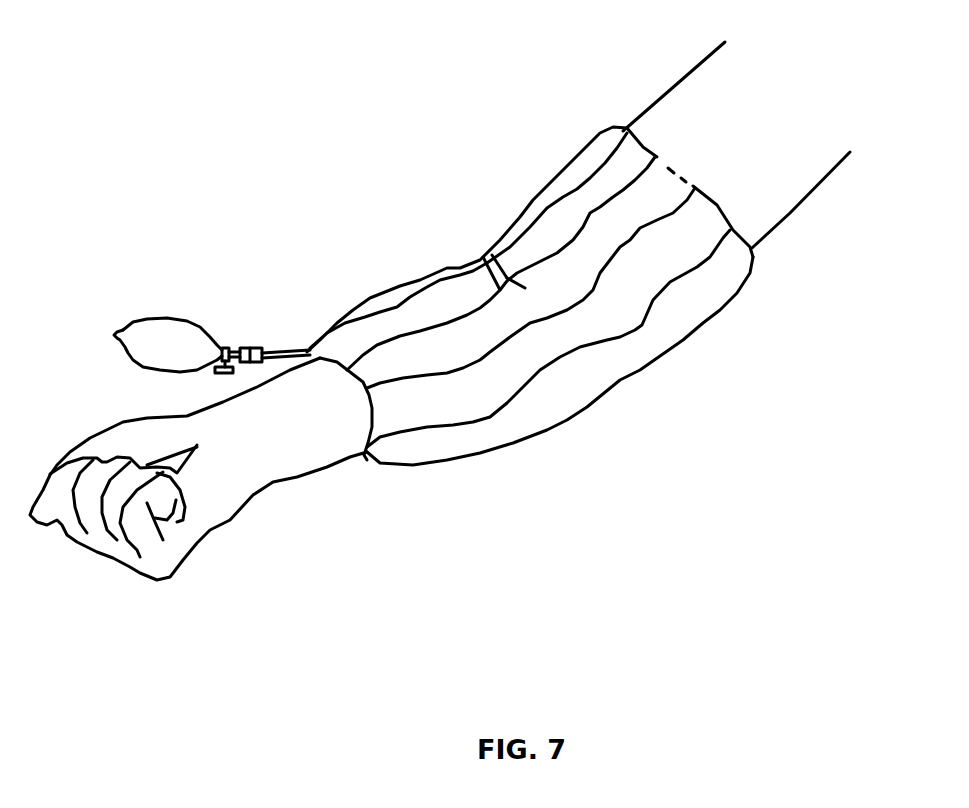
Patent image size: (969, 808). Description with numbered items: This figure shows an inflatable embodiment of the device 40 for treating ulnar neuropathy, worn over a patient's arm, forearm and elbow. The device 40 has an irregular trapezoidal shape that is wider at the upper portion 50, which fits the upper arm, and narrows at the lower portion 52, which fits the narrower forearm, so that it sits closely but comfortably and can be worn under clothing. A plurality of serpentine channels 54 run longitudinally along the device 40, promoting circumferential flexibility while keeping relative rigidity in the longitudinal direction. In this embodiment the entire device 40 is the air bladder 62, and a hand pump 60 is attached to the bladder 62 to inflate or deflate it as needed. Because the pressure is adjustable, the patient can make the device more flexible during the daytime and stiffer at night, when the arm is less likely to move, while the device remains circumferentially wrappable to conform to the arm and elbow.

The device 40 is at (610, 443).
The upper portion 50 is at (717, 205).
The lower portion 52 is at (358, 432).
The channels 54 is at (642, 326).
The hand pump 60 is at (172, 320).
The air bladder 62 is at (545, 195).